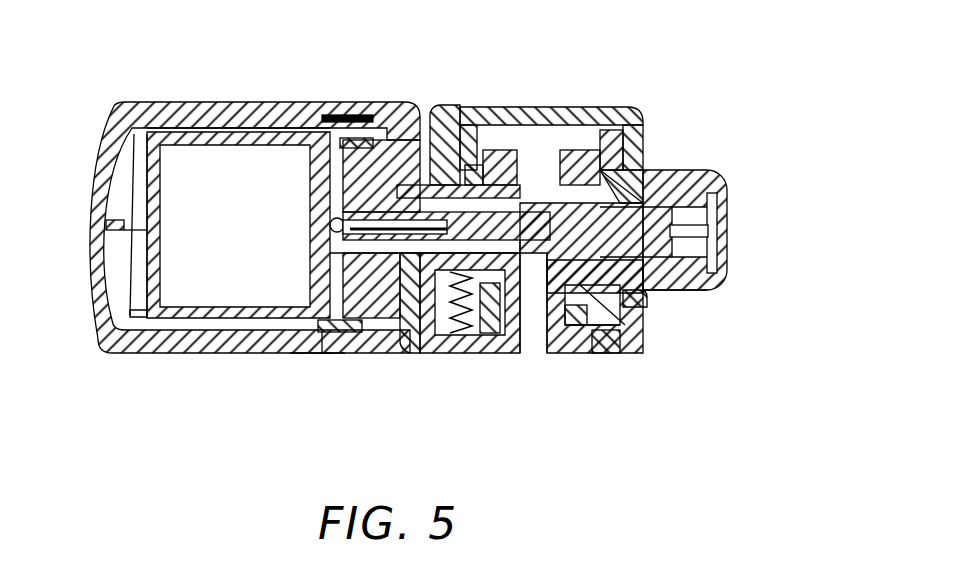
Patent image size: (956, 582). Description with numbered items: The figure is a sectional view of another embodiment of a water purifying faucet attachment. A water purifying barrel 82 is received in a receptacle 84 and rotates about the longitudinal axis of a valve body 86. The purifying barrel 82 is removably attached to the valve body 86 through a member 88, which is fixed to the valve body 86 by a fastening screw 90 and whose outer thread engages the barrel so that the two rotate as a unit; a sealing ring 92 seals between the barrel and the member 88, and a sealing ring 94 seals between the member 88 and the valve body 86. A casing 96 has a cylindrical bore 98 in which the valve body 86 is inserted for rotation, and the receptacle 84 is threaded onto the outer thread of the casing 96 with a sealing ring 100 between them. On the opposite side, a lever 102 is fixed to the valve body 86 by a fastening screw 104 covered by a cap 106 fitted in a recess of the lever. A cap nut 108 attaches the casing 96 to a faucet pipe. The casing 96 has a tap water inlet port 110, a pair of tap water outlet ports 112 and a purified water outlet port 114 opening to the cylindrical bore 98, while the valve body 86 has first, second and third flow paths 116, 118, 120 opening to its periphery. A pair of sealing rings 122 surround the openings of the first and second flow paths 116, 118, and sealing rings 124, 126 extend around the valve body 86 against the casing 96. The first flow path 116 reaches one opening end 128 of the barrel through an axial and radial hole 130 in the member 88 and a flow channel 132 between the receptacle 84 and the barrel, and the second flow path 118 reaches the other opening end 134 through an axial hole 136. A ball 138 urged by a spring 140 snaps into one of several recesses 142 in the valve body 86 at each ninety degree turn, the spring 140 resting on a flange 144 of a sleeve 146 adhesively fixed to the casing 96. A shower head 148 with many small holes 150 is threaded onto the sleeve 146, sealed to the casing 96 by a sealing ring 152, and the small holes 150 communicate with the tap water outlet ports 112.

The water purifying barrel 82 is at (261, 140).
The receptacle 84 is at (112, 112).
The valve body 86 is at (652, 292).
The member 88 is at (397, 104).
The fastening screw 90 is at (383, 355).
The sealing ring 92 is at (357, 355).
The sealing ring 94 is at (437, 106).
The casing 96 is at (471, 185).
The cylindrical bore 98 is at (645, 185).
The sealing ring 100 is at (369, 104).
The lever 102 is at (697, 168).
The fastening screw 104 is at (725, 205).
The cap 106 is at (728, 242).
The cap nut 108 is at (625, 108).
The tap water inlet port 110 is at (535, 170).
The tap water outlet ports 112 is at (620, 320).
The purified water outlet port 114 is at (530, 355).
The first flow path 116 is at (560, 165).
The second flow path 118 is at (493, 355).
The third flow path 120 is at (492, 170).
The sealing rings 122 is at (530, 160).
The sealing ring 124 is at (645, 163).
The sealing ring 126 is at (467, 108).
The opening end 128 is at (135, 196).
The axial and radial hole 130 is at (420, 106).
The flow channel 132 is at (196, 128).
The opening end 134 is at (321, 355).
The axial hole 136 is at (334, 355).
The ball 138 is at (437, 355).
The spring 140 is at (470, 355).
The recesses 142 is at (423, 355).
The flange 144 is at (593, 355).
The sleeve 146 is at (555, 355).
The shower head 148 is at (600, 352).
The small holes 150 is at (592, 355).
The sealing ring 152 is at (635, 300).